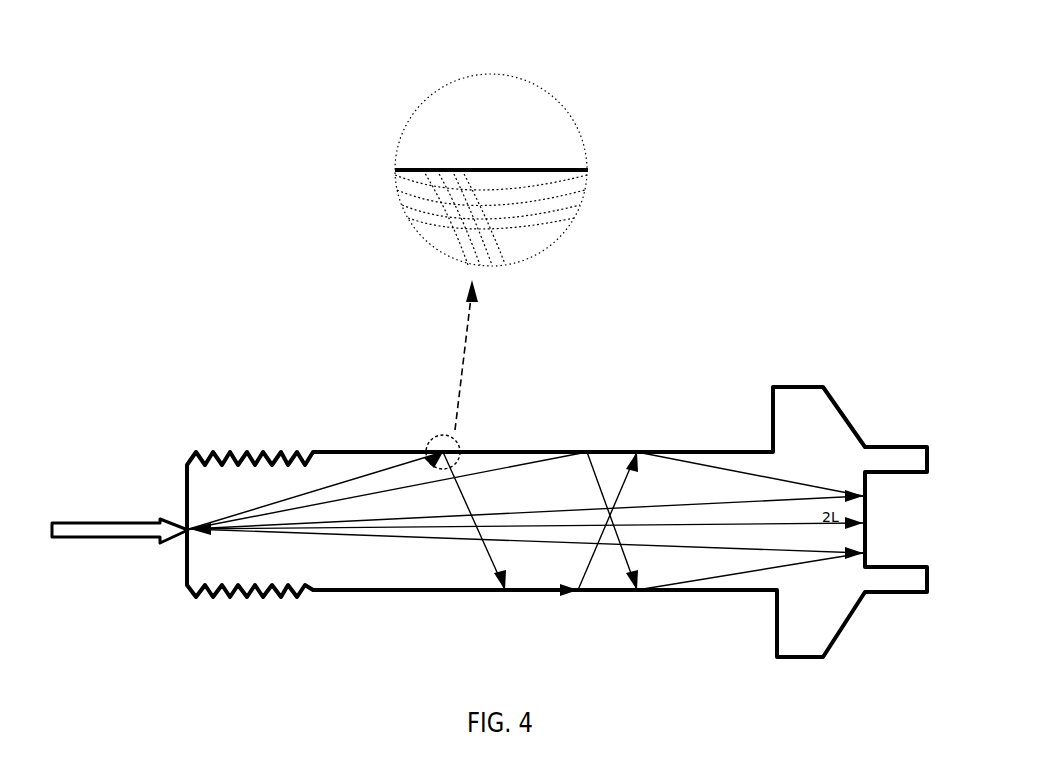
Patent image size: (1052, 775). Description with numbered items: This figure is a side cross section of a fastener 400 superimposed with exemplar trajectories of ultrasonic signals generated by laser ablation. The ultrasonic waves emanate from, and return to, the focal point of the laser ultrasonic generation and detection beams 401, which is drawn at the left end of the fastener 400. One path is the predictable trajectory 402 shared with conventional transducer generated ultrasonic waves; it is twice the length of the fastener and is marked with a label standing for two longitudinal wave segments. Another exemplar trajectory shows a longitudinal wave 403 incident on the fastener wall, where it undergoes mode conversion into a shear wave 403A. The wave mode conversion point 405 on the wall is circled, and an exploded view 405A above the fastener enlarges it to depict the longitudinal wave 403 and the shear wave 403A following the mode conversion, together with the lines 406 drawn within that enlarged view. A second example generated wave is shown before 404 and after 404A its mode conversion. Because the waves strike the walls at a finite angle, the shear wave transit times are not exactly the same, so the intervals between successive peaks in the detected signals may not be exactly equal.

The fastener 400 is at (731, 269).
The laser ultrasonic generation and detection beams 401 is at (117, 538).
The predictable trajectory 402 is at (381, 528).
The longitudinal wave 403 is at (332, 485).
The shear wave 403A is at (497, 560).
The second example generated wave before mode conversion 404 is at (545, 462).
The second example generated wave after mode conversion 404A is at (625, 562).
The wave mode conversion point 405 is at (426, 430).
The exploded view of the wave mode conversion point 405A is at (360, 167).
The surface texture lines 406 is at (452, 218).